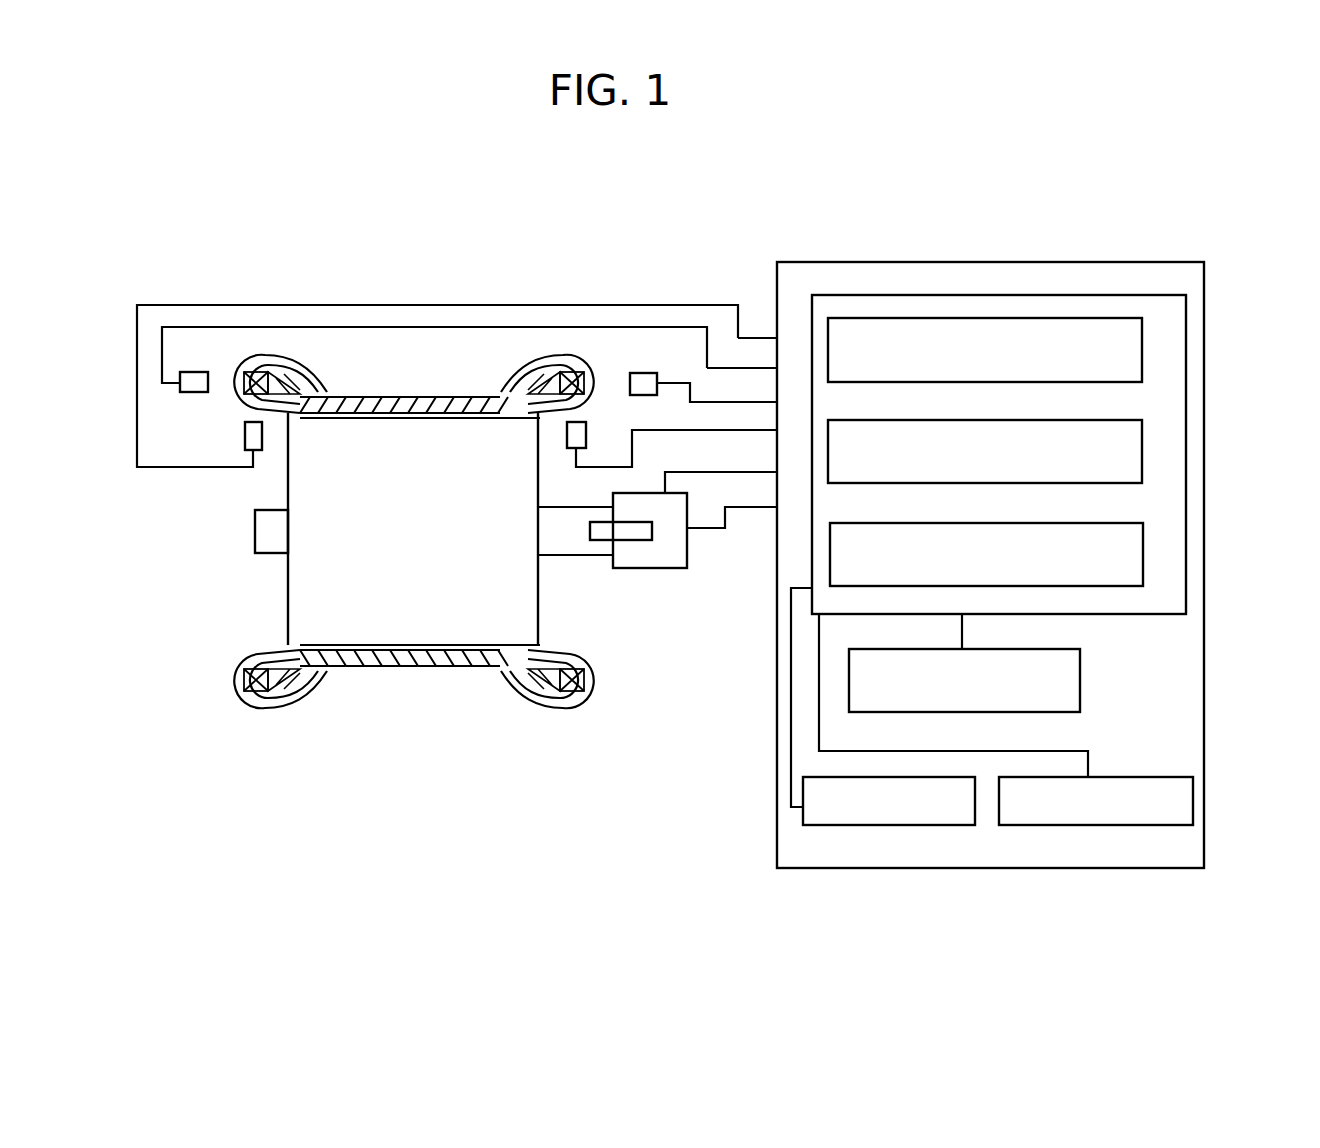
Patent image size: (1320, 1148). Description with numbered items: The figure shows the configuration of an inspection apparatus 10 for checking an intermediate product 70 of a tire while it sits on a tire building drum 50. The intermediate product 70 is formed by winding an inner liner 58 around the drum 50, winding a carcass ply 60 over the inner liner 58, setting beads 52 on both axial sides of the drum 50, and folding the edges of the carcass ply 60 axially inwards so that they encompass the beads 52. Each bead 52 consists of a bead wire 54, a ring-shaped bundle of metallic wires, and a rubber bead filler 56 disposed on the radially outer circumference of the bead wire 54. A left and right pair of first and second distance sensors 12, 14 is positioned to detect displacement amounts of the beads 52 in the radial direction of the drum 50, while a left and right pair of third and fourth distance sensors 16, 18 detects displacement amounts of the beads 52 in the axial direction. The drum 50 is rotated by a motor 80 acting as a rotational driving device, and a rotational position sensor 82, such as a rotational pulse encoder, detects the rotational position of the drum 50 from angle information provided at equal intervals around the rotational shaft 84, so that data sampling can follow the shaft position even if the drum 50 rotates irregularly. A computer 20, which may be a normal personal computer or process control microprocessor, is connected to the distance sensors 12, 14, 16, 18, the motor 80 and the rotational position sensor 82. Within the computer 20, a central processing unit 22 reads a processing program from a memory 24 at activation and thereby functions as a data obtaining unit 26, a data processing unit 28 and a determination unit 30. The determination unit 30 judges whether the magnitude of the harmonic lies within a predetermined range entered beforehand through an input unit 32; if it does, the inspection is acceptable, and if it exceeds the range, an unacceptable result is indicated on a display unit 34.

The inspection apparatus 10 is at (531, 234).
The first distance sensor 12 is at (573, 438).
The second distance sensor 14 is at (270, 443).
The third distance sensor 16 is at (648, 372).
The fourth distance sensor 18 is at (204, 371).
The computer 20 is at (799, 262).
The central processing unit 22 is at (884, 295).
The memory 24 is at (1080, 690).
The data obtaining unit 26 is at (1142, 343).
The data processing unit 28 is at (1142, 458).
The determination unit 30 is at (1143, 565).
The input unit 32 is at (870, 825).
The display unit 34 is at (1138, 825).
The tire building drum 50 is at (298, 595).
The bead 52 is at (268, 692).
The bead wire 54 is at (243, 705).
The bead filler 56 is at (550, 705).
The inner liner 58 is at (430, 648).
The carcass ply 60 is at (487, 670).
The intermediate product 70 is at (362, 684).
The motor 80 is at (680, 570).
The rotational position sensor 82 is at (633, 572).
The rotational shaft 84 is at (262, 530).